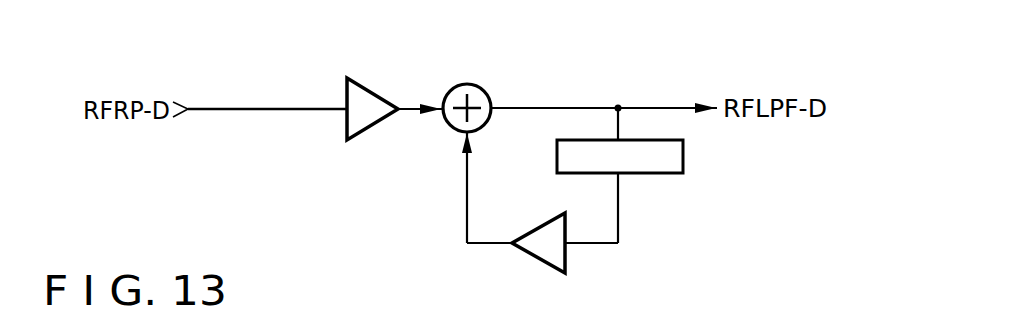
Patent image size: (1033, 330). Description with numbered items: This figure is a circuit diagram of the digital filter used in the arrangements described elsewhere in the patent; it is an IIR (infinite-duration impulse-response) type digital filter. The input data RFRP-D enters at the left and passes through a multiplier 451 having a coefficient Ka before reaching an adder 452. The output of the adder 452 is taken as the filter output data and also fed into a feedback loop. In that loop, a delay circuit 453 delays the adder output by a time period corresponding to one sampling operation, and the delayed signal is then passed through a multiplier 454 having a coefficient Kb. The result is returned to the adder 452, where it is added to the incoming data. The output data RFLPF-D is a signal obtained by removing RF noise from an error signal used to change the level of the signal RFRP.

The multiplier 451 is at (368, 128).
The adder 452 is at (485, 92).
The delay circuit 453 is at (662, 174).
The multiplier 454 is at (568, 262).